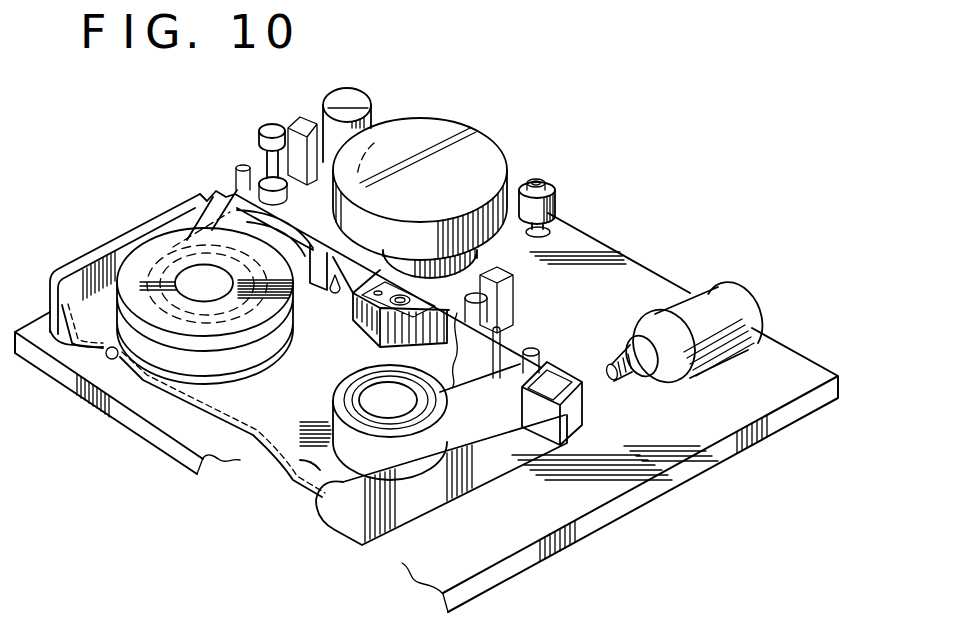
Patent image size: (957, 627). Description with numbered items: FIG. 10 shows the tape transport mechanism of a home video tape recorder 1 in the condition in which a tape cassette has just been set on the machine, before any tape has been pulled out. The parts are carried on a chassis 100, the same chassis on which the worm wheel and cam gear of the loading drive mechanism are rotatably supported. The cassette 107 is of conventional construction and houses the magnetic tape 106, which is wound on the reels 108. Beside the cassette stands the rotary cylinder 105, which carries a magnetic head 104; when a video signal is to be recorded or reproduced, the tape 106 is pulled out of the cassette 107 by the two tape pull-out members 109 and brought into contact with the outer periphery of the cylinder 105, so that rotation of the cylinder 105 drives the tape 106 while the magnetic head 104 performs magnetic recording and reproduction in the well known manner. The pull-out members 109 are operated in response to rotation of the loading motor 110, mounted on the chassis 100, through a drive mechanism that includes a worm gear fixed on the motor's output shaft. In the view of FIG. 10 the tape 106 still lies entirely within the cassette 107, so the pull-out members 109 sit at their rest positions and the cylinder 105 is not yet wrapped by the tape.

The tape recording/reproducing apparatus 1 is at (557, 208).
The chassis 100 is at (660, 488).
The magnetic head 104 is at (509, 183).
The rotary cylinder 105 is at (452, 128).
The tape 106 is at (513, 352).
The cassette 107 is at (112, 235).
The reels 108 is at (158, 327).
The tape pull-out members 109 is at (254, 195).
The loading motor 110 is at (708, 292).